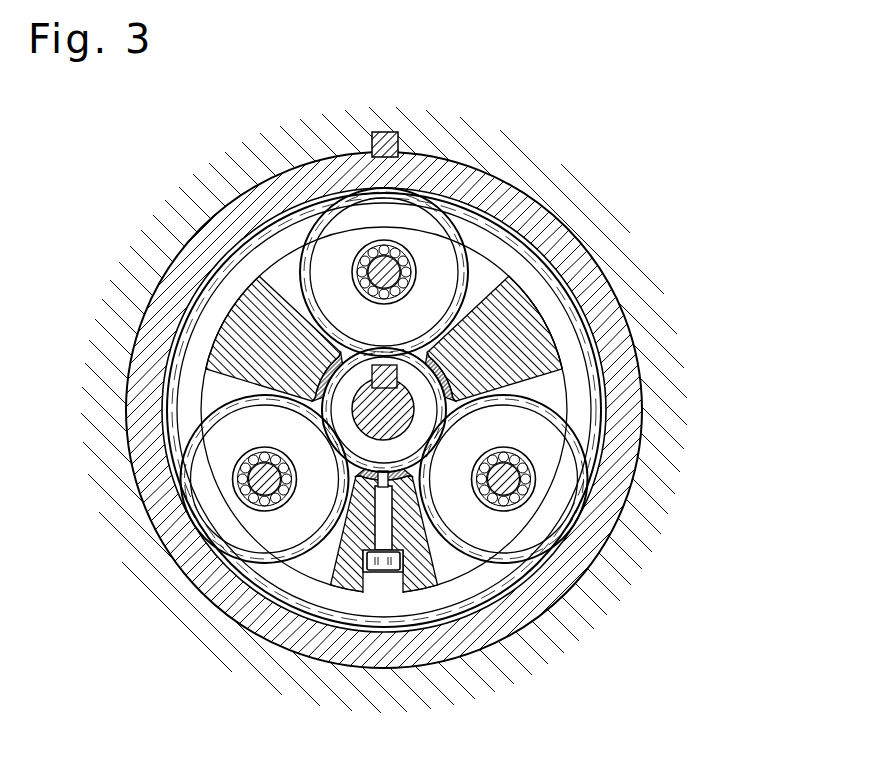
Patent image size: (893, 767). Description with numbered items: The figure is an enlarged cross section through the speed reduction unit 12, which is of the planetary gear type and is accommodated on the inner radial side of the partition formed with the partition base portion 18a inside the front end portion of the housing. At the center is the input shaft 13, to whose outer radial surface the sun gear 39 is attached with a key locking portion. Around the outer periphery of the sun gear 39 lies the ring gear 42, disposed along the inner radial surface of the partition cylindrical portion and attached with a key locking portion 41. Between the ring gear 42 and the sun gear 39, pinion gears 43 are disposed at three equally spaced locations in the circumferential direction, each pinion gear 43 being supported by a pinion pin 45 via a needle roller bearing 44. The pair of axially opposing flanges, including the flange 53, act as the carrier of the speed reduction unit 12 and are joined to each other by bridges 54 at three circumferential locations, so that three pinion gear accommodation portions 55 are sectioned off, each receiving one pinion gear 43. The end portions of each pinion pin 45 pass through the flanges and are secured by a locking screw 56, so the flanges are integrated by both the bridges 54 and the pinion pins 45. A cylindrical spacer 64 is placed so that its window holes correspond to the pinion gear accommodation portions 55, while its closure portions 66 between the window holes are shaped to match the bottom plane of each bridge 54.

The speed reduction unit 12 is at (555, 210).
The input shaft 13 is at (387, 413).
The partition base portion 18a is at (655, 500).
The sun gear 39 is at (457, 401).
The key locking portion 41 is at (387, 131).
The ring gear 42 is at (455, 168).
The pinion gear 43 is at (366, 210).
The needle roller bearing 44 is at (243, 460).
The pinion pin 45 is at (268, 478).
The flange 53 is at (225, 305).
The bridge 54 is at (517, 293).
The pinion gear accommodation portion 55 is at (272, 273).
The locking screw 56 is at (383, 575).
The spacer 64 is at (403, 487).
The closure portion 66 is at (470, 362).